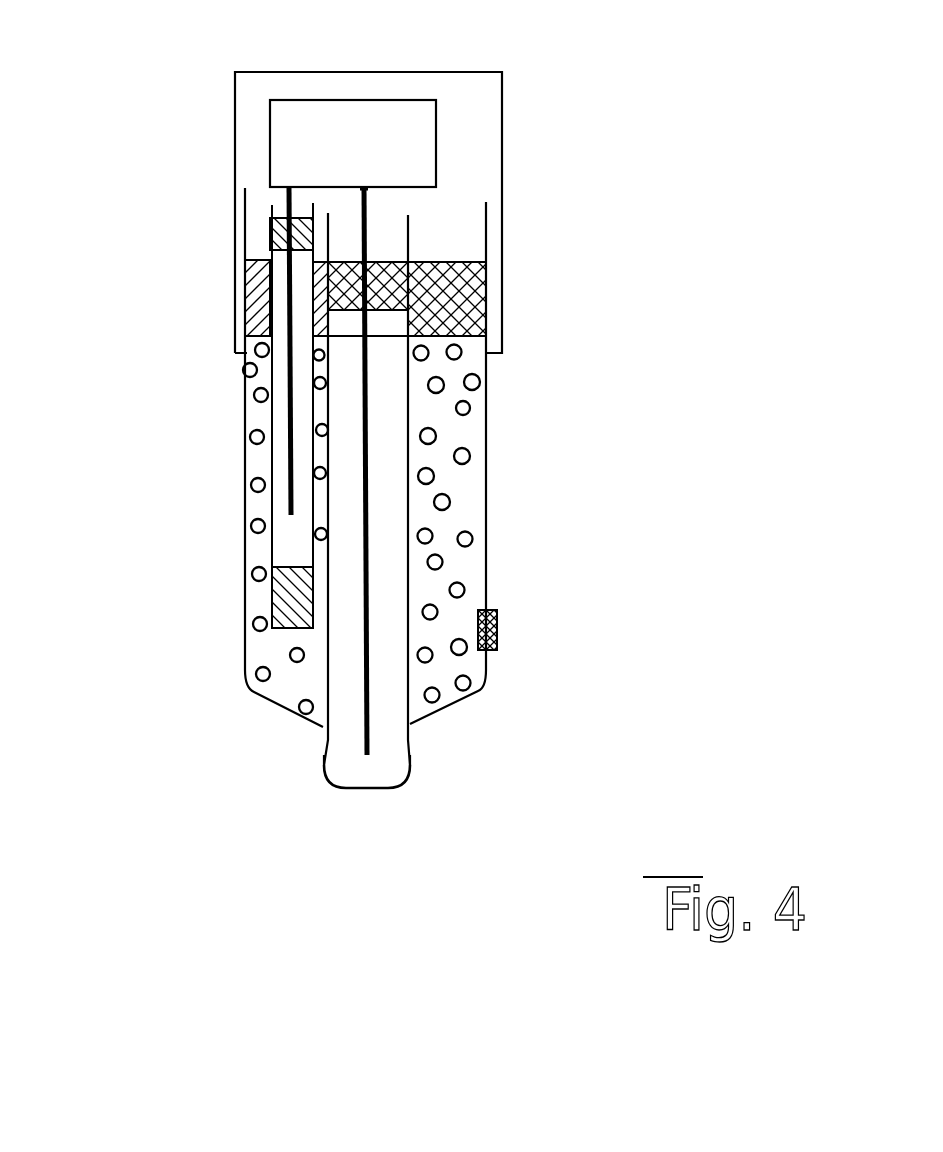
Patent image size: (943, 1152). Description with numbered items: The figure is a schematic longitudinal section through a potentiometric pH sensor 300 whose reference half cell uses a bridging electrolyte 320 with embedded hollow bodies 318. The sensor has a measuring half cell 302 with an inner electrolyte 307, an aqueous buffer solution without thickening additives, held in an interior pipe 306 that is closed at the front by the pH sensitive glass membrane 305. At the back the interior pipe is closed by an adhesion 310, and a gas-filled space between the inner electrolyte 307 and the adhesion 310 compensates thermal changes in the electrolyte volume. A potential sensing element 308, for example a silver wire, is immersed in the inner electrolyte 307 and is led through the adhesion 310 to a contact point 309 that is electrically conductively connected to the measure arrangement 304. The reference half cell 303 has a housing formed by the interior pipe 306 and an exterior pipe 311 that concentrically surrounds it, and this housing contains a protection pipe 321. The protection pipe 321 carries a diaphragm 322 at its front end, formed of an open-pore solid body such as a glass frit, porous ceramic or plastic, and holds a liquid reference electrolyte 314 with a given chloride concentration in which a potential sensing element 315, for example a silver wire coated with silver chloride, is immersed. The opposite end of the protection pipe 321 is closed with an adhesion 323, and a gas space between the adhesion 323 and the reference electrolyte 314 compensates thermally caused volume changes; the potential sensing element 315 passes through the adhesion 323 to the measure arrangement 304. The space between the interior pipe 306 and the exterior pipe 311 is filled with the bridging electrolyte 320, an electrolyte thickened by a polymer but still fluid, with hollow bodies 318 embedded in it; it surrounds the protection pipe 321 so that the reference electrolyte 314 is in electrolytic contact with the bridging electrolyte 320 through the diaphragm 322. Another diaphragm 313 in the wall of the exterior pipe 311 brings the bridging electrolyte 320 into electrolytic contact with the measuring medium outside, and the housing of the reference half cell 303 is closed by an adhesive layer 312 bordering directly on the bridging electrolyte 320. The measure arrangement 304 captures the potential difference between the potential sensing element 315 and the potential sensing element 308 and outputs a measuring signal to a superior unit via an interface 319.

The potentiometric pH sensor 300 is at (583, 226).
The measuring half cell 302 is at (308, 786).
The reference half cell 303 is at (507, 687).
The measure arrangement 304 is at (353, 143).
The pH sensitive glass membrane 305 is at (405, 780).
The interior pipe 306 is at (322, 672).
The inner electrolyte 307 is at (390, 590).
The potential sensing element 308 is at (370, 738).
The contact point 309 is at (367, 192).
The adhesion 310 is at (392, 272).
The exterior pipe 311 is at (244, 509).
The adhesive layer 312 is at (247, 272).
The diaphragm 313 is at (507, 630).
The reference electrolyte 314 is at (280, 460).
The potential sensing element 315 is at (292, 357).
The hollow bodies 318 is at (461, 353).
The interface 319 is at (362, 97).
The bridging electrolyte 320 is at (475, 492).
The protection pipe 321 is at (272, 413).
The diaphragm 322 is at (278, 590).
The adhesion 323 is at (270, 207).